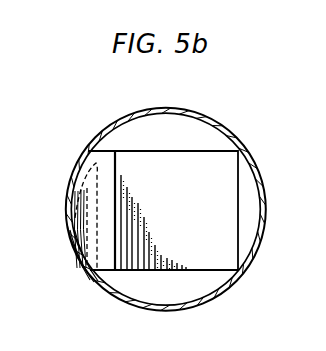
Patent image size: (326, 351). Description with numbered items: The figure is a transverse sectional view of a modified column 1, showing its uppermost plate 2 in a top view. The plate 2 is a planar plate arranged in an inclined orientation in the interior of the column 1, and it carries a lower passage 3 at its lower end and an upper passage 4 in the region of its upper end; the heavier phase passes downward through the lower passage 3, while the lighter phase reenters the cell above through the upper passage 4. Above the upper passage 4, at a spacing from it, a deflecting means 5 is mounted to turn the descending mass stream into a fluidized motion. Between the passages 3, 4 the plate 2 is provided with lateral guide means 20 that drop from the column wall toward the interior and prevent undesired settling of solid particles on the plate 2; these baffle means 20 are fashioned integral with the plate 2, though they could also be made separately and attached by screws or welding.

The column 1 is at (78, 152).
The plate 2 is at (222, 240).
The lower passage 3 is at (251, 205).
The upper passage 4 is at (69, 247).
The deflecting means 5 is at (102, 258).
The lateral guide means 20 is at (190, 140).